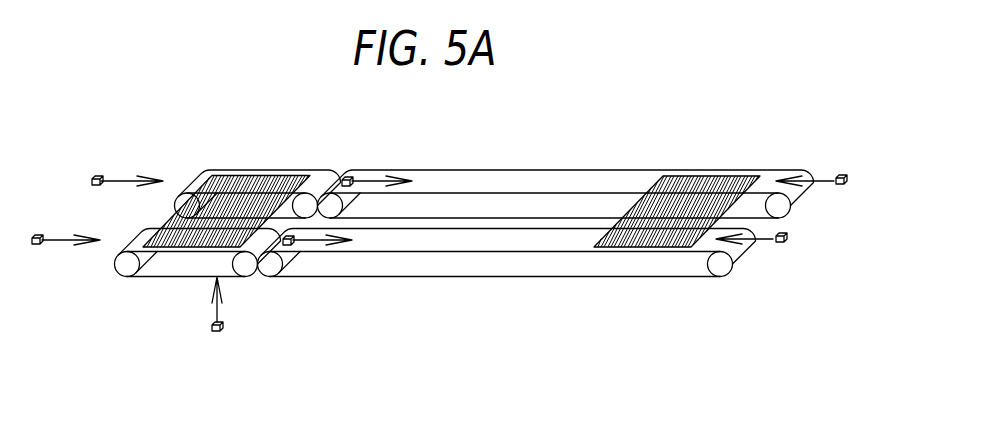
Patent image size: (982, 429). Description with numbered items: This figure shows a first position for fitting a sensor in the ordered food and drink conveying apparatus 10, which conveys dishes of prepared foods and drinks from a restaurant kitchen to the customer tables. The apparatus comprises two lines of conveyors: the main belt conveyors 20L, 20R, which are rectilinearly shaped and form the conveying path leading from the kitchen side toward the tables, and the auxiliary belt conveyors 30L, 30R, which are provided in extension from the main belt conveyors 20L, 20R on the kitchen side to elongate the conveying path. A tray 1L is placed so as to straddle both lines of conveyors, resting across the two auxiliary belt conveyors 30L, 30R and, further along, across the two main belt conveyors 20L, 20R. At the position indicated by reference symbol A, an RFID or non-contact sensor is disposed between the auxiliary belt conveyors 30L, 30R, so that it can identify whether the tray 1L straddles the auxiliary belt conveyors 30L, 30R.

The ordered food and drink conveying apparatus 10 is at (596, 124).
The tray 1L is at (250, 183).
The main belt conveyor 20L is at (490, 170).
The main belt conveyor 20R is at (463, 278).
The auxiliary belt conveyor 30L is at (217, 170).
The auxiliary belt conveyor 30R is at (168, 278).
The sensor position A is at (225, 327).